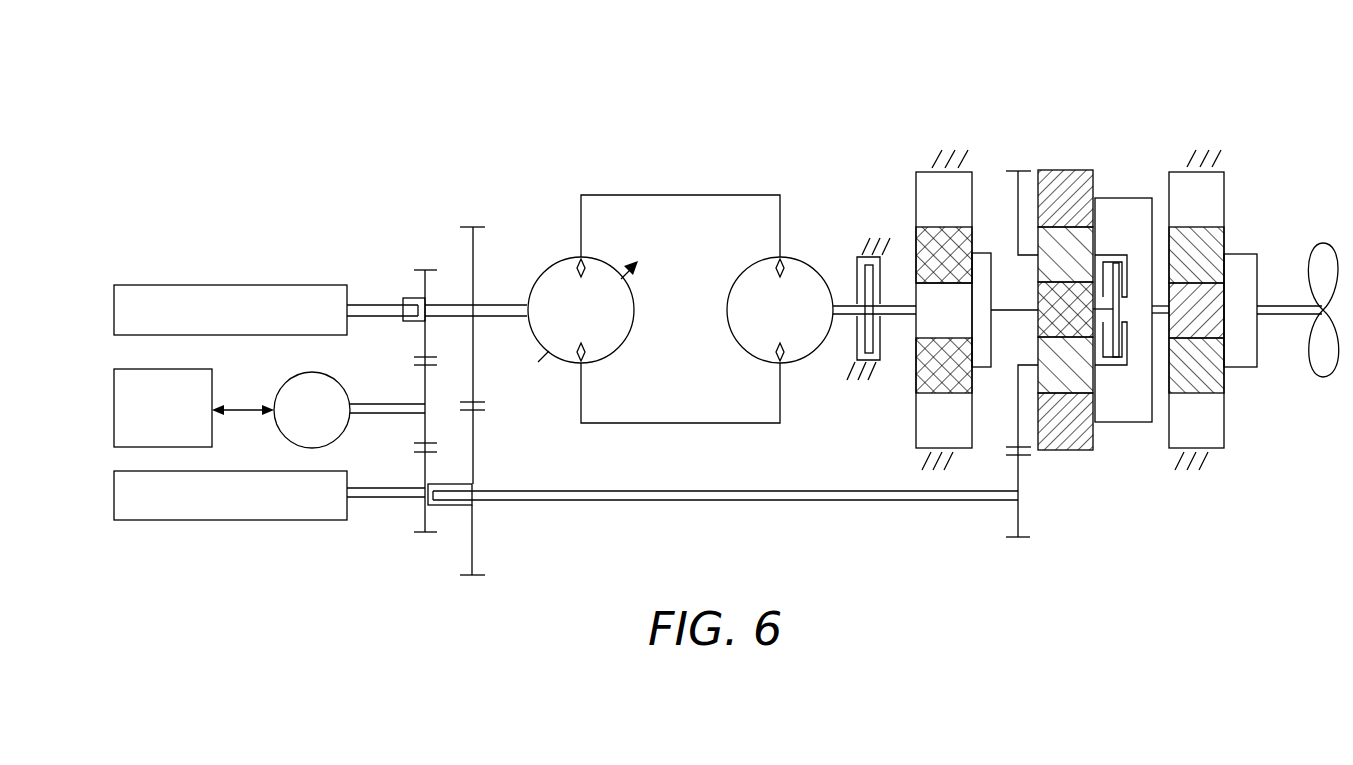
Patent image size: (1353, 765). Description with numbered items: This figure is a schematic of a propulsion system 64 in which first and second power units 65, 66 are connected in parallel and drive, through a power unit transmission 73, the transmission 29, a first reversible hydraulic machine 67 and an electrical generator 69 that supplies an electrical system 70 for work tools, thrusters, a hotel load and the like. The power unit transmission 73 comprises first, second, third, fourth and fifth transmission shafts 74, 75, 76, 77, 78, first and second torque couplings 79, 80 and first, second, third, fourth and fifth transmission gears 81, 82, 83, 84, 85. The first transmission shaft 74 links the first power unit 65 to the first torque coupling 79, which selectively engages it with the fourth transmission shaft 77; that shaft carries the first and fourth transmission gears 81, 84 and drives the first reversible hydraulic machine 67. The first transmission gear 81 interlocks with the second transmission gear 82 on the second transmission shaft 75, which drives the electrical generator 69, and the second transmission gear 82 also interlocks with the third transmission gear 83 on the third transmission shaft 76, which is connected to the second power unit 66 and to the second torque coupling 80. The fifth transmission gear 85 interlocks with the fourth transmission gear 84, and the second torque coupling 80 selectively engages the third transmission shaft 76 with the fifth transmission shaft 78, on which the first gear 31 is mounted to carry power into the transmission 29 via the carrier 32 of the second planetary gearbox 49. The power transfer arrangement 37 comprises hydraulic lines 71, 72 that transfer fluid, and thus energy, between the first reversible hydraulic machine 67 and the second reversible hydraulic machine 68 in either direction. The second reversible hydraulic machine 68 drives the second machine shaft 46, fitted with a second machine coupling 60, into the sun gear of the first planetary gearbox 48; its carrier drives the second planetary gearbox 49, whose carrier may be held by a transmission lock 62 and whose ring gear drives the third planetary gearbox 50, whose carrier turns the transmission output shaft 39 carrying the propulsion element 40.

The propulsion system 64 is at (765, 70).
The power transfer arrangement 37 is at (670, 275).
The power unit transmission 73 is at (437, 359).
The hydraulic line 71 is at (683, 195).
The hydraulic line 72 is at (683, 423).
The first reversible hydraulic machine 67 is at (546, 262).
The second reversible hydraulic machine 68 is at (745, 262).
The first power unit 65 is at (233, 285).
The second power unit 66 is at (232, 520).
The electrical system 70 is at (114, 405).
The electrical generator 69 is at (282, 387).
The first transmission shaft 74 is at (368, 305).
The second transmission shaft 75 is at (362, 414).
The third transmission shaft 76 is at (360, 499).
The fourth transmission shaft 77 is at (455, 305).
The first torque coupling 79 is at (414, 300).
The second torque coupling 80 is at (467, 506).
The first transmission gear 81 is at (424, 337).
The second transmission gear 82 is at (424, 383).
The third transmission gear 83 is at (424, 510).
The fourth transmission gear 84 is at (476, 278).
The fifth transmission gear 85 is at (474, 405).
The fifth transmission shaft 78 is at (567, 491).
The second machine shaft 46 is at (840, 316).
The second machine coupling 60 is at (858, 257).
The first planetary gearbox 48 is at (920, 172).
The transmission 29 is at (1066, 293).
The second planetary gearbox 49 is at (1066, 170).
The transmission lock 62 is at (1114, 255).
The carrier 32 is at (1021, 365).
The first gear 31 is at (1018, 520).
The third planetary gearbox 50 is at (1224, 185).
The transmission output shaft 39 is at (1281, 305).
The propulsion element 40 is at (1323, 243).